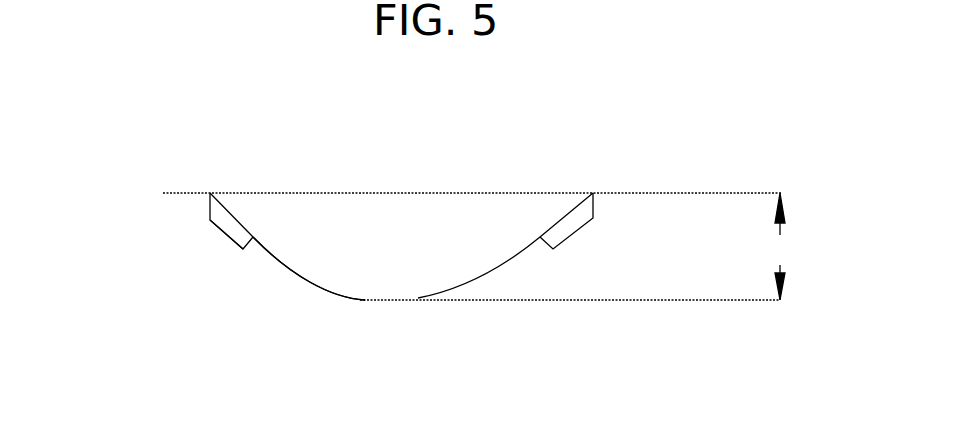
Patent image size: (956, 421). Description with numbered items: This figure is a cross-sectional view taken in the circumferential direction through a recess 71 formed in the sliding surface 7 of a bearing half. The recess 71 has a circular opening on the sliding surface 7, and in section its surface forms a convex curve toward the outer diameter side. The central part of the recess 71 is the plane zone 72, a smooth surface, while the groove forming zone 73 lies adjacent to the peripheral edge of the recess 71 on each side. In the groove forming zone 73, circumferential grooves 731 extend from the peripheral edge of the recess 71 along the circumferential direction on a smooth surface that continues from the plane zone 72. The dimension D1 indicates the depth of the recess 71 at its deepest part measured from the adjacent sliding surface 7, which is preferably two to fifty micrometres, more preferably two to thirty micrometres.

The sliding surface 7 is at (180, 193).
The recess 71 is at (393, 267).
The plane zone 72 is at (418, 297).
The groove forming zone 73 is at (230, 213).
The circumferential grooves 731 is at (210, 220).
The depth D1 is at (781, 246).